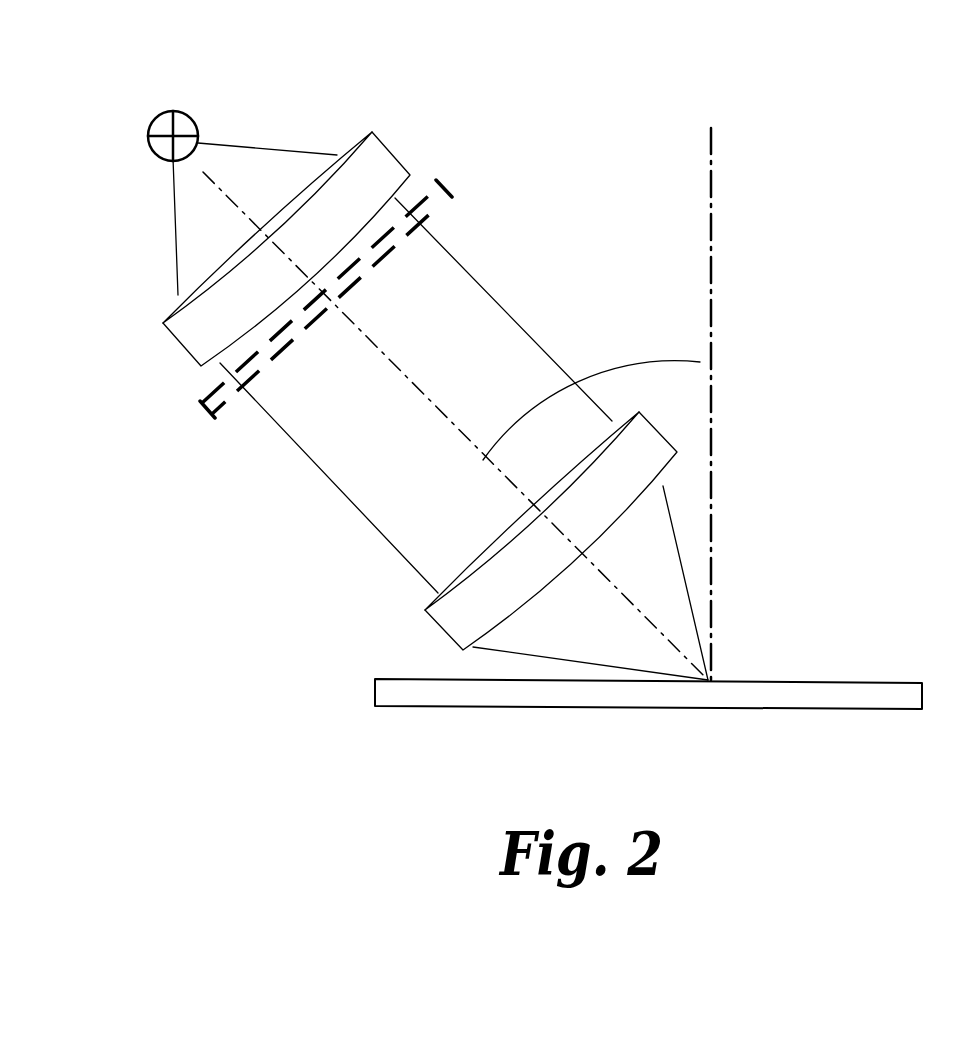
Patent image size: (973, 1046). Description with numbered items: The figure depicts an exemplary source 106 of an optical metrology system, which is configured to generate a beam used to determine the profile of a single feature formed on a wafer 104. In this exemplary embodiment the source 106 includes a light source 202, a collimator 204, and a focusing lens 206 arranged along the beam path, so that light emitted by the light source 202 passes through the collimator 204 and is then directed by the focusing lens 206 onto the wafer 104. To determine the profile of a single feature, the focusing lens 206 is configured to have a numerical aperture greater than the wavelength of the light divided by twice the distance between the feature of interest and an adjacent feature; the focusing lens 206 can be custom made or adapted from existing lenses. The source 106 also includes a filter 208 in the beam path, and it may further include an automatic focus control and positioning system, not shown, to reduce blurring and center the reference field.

The wafer 104 is at (834, 682).
The source 106 is at (583, 118).
The light source 202 is at (190, 115).
The collimator 204 is at (374, 131).
The focusing lens 206 is at (437, 632).
The filter 208 is at (447, 192).